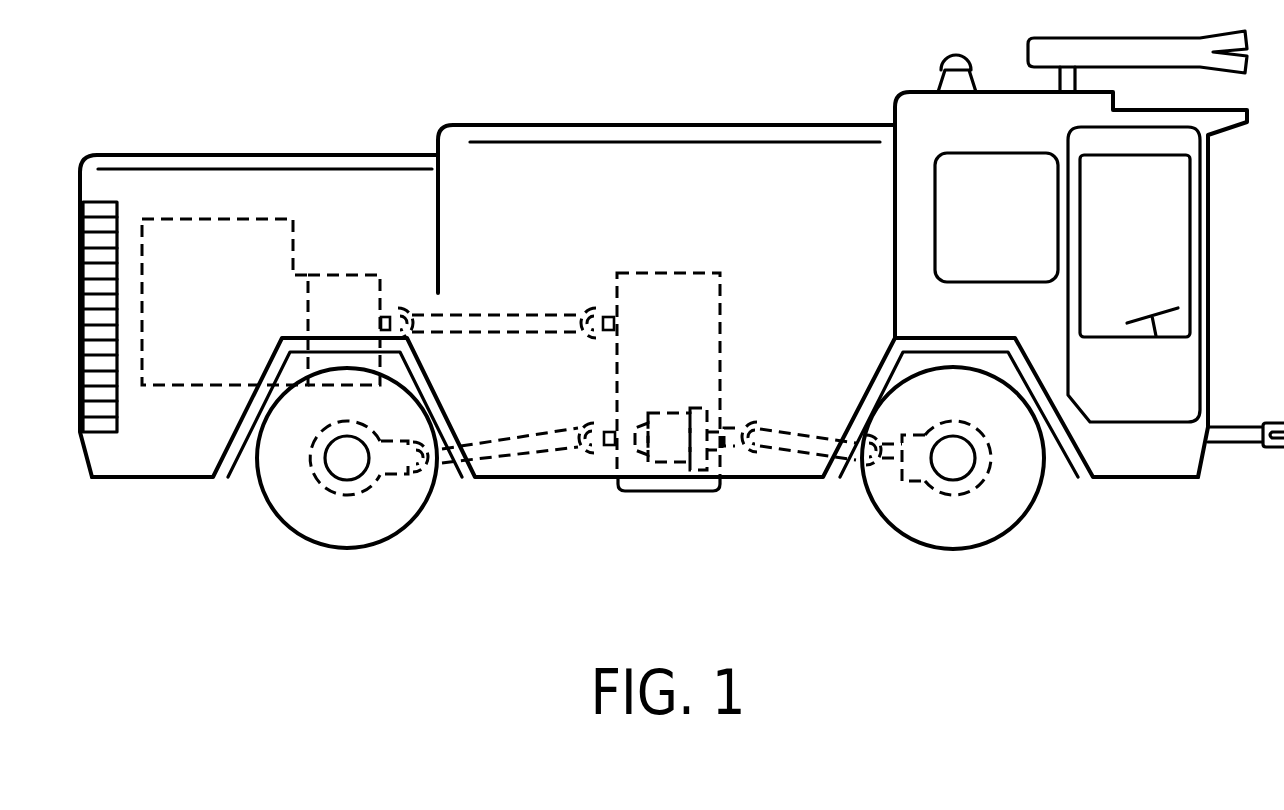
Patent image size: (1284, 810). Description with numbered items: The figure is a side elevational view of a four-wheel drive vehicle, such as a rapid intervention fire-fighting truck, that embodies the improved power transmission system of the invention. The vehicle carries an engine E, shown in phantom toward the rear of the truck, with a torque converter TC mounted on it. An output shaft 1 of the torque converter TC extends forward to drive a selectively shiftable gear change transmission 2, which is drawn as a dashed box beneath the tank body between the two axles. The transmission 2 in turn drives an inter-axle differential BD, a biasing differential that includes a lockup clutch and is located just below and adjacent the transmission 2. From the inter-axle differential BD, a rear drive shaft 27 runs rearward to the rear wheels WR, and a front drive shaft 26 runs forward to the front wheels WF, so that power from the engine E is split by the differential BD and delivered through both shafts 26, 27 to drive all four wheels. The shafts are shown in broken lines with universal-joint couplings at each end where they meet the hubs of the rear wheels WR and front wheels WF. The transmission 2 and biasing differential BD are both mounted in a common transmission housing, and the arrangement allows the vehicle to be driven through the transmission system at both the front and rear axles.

The engine E is at (296, 250).
The torque converter TC is at (383, 287).
The output shaft 1 is at (505, 315).
The gear change transmission 2 is at (722, 306).
The rear drive shaft 27 is at (523, 458).
The inter-axle differential BD is at (668, 445).
The front drive shaft 26 is at (788, 458).
The rear wheels WR is at (262, 492).
The front wheels WF is at (1044, 496).